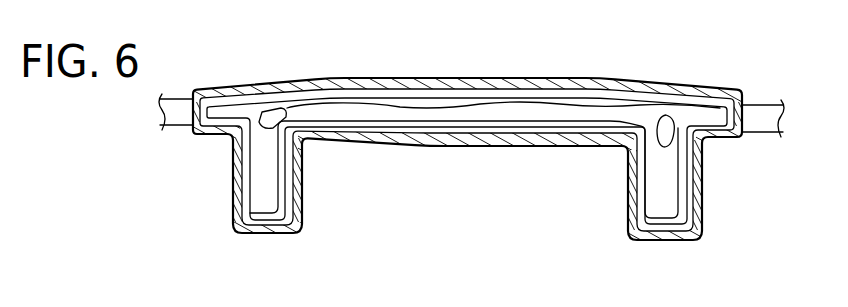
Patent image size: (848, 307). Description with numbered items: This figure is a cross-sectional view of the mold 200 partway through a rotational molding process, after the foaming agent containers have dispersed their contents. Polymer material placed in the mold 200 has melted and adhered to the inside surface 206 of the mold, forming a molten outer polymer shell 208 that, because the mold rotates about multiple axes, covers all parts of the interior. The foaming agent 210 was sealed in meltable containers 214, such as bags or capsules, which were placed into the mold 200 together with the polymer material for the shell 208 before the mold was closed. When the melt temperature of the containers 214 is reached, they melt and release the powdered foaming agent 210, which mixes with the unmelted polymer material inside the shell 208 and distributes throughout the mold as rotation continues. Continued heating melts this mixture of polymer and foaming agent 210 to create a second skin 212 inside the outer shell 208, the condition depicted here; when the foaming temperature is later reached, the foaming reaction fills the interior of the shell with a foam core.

The mold 200 is at (702, 173).
The inside surface of the mold 206 is at (542, 97).
The polymer shell 208 is at (392, 92).
The foaming agent 210 is at (280, 213).
The second skin 212 is at (493, 103).
The meltable container 214 is at (267, 117).